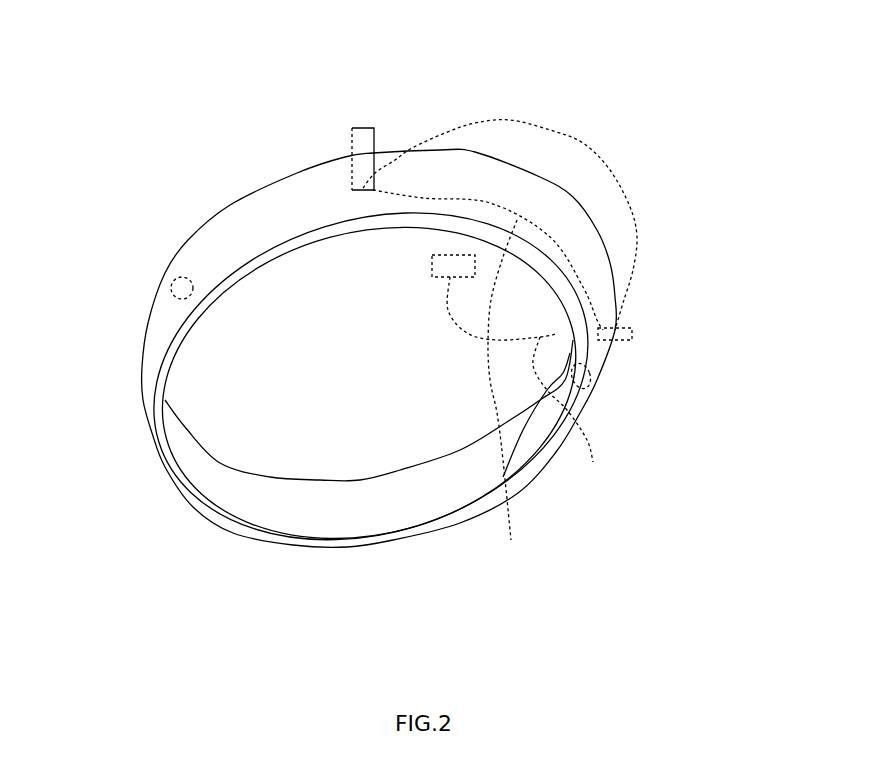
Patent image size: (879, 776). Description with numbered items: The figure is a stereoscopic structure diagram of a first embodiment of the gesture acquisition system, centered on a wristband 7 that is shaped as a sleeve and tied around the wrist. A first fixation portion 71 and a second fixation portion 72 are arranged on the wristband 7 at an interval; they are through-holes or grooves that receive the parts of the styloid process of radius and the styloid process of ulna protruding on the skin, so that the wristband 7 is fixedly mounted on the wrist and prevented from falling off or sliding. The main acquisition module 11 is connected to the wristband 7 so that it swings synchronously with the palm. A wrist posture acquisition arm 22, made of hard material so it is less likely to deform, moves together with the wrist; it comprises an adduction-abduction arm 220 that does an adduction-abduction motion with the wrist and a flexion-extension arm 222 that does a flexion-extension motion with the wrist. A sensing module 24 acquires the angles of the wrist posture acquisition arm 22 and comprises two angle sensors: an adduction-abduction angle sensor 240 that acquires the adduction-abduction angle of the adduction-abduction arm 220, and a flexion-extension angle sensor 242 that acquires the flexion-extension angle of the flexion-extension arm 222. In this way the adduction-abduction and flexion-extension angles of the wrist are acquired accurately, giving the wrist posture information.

The wristband 7 is at (222, 232).
The first fixation portion 71 is at (178, 283).
The second fixation portion 72 is at (592, 382).
The main acquisition module 11 is at (433, 265).
The wrist posture acquisition arm 22 is at (642, 517).
The adduction-abduction arm 220 is at (550, 398).
The flexion-extension arm 222 is at (518, 409).
The sensing module 24 is at (723, 55).
The adduction-abduction angle sensor 240 is at (370, 140).
The flexion-extension angle sensor 242 is at (613, 330).